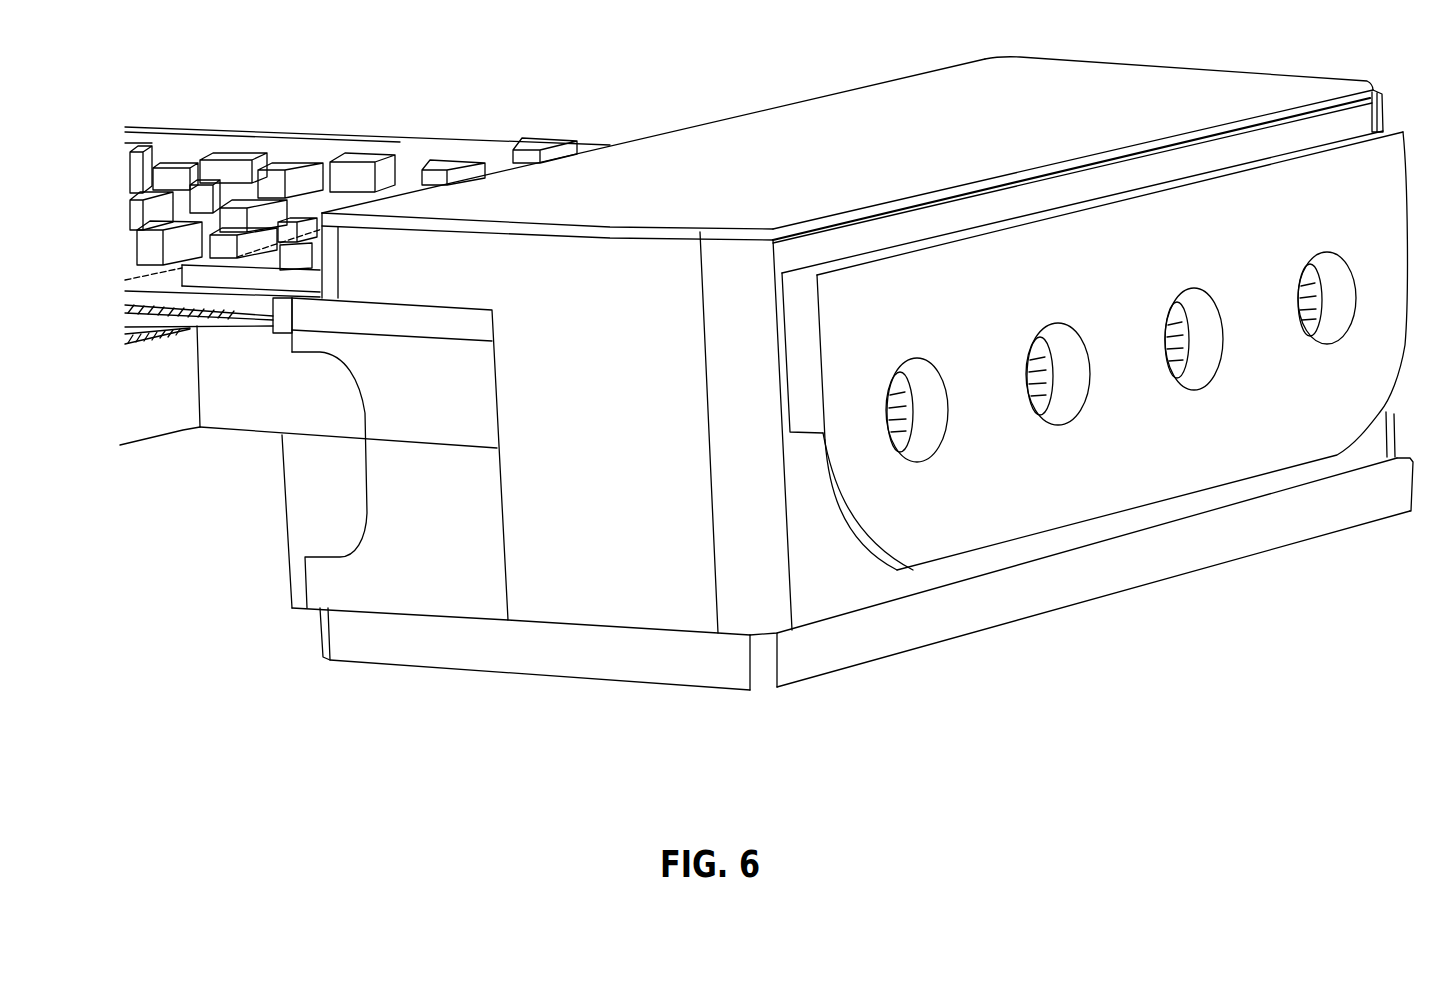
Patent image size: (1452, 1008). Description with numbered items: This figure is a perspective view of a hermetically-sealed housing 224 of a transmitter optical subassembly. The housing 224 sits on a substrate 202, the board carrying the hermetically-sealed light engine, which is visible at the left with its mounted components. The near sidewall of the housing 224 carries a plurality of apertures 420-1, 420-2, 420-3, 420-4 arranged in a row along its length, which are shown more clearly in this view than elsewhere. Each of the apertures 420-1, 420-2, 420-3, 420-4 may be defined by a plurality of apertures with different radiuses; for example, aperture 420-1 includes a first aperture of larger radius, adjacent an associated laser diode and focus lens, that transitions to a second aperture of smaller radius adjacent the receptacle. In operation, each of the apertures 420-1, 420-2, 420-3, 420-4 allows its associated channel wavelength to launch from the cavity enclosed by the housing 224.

The substrate 202 is at (335, 123).
The housing 224 is at (852, 98).
The aperture 420-1 is at (942, 432).
The aperture 420-2 is at (1057, 403).
The aperture 420-3 is at (1200, 365).
The aperture 420-4 is at (1332, 335).